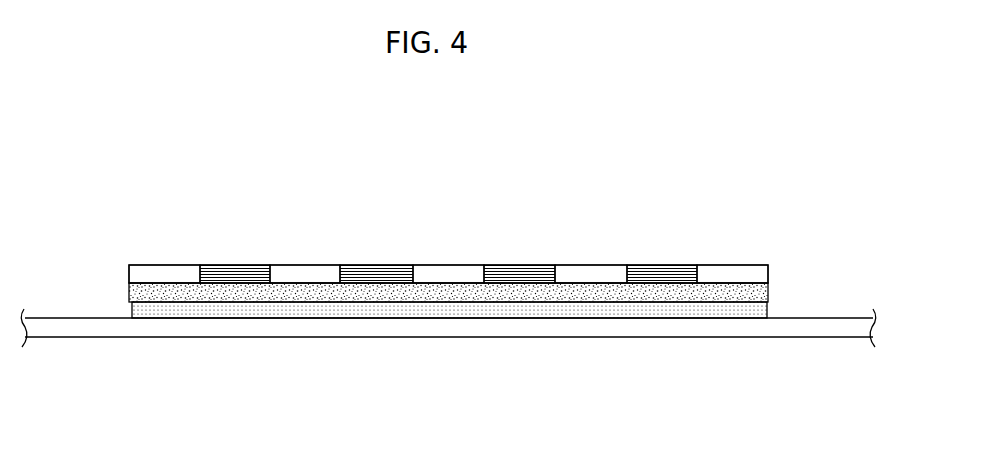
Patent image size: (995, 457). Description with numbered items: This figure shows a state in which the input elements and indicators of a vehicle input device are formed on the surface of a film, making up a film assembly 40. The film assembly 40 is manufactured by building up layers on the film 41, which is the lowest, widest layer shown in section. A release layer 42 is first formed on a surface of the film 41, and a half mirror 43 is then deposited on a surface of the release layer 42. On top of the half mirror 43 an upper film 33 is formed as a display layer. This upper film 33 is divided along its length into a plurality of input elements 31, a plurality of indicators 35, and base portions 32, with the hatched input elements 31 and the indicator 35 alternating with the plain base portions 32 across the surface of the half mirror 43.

The film assembly 40 is at (92, 133).
The film 41 is at (841, 326).
The release layer 42 is at (333, 313).
The half mirror 43 is at (770, 291).
The upper film 33 is at (776, 274).
The input element 31 is at (376, 272).
The base portion 32 is at (163, 266).
The indicator 35 is at (234, 272).